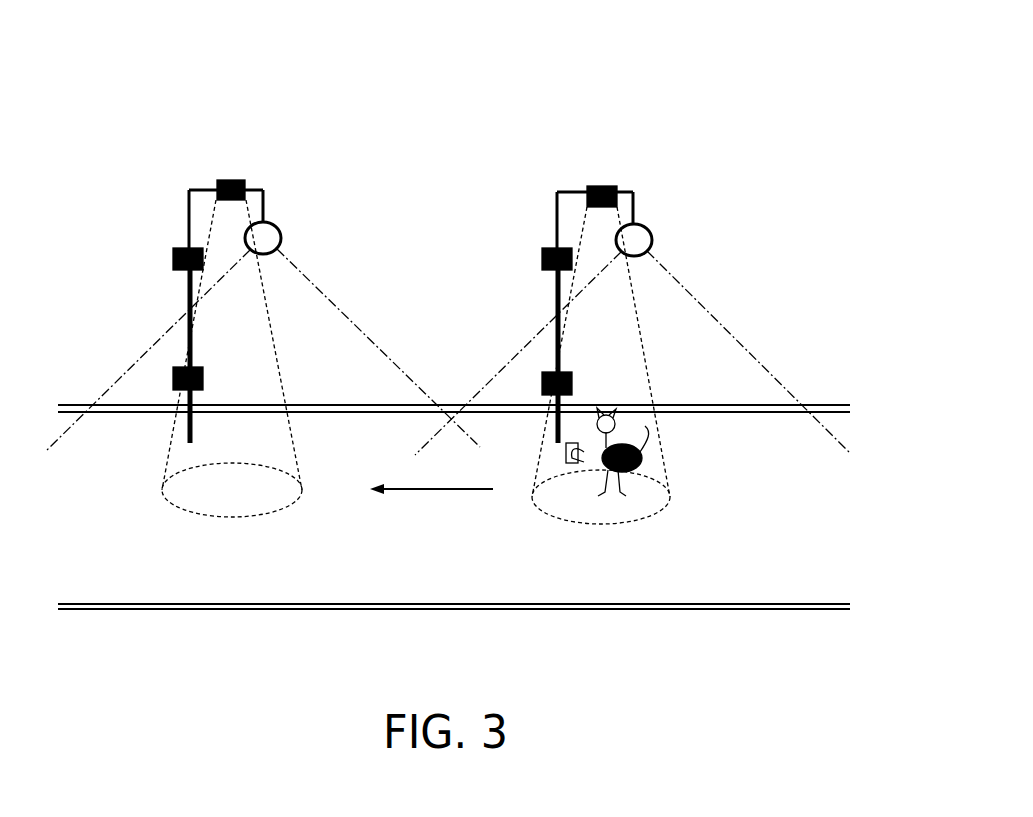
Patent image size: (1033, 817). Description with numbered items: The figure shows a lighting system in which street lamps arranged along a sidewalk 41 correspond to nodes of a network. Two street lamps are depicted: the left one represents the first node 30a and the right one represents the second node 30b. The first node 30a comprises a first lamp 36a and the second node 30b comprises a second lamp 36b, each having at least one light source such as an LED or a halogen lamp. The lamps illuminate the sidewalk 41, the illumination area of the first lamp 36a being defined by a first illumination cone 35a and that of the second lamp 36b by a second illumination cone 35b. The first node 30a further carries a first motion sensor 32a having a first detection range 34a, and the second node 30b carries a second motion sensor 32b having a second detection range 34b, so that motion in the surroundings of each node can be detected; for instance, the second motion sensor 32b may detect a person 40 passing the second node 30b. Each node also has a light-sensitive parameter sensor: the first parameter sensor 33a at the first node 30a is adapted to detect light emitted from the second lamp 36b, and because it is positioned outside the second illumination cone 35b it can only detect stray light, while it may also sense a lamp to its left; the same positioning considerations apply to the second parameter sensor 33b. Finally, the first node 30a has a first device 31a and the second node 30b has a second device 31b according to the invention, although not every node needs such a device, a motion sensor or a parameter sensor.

The first node 30a is at (219, 86).
The second node 30b is at (585, 88).
The first device 31a is at (174, 250).
The second device 31b is at (543, 251).
The first motion sensor 32a is at (222, 181).
The second motion sensor 32b is at (590, 186).
The first parameter sensor 33a is at (174, 368).
The second parameter sensor 33b is at (544, 372).
The first detection range 34a is at (265, 288).
The second detection range 34b is at (634, 298).
The first illumination cone 35a is at (347, 308).
The second illumination cone 35b is at (722, 322).
The first lamp 36a is at (281, 229).
The second lamp 36b is at (650, 229).
The person 40 is at (612, 505).
The sidewalk 41 is at (748, 583).